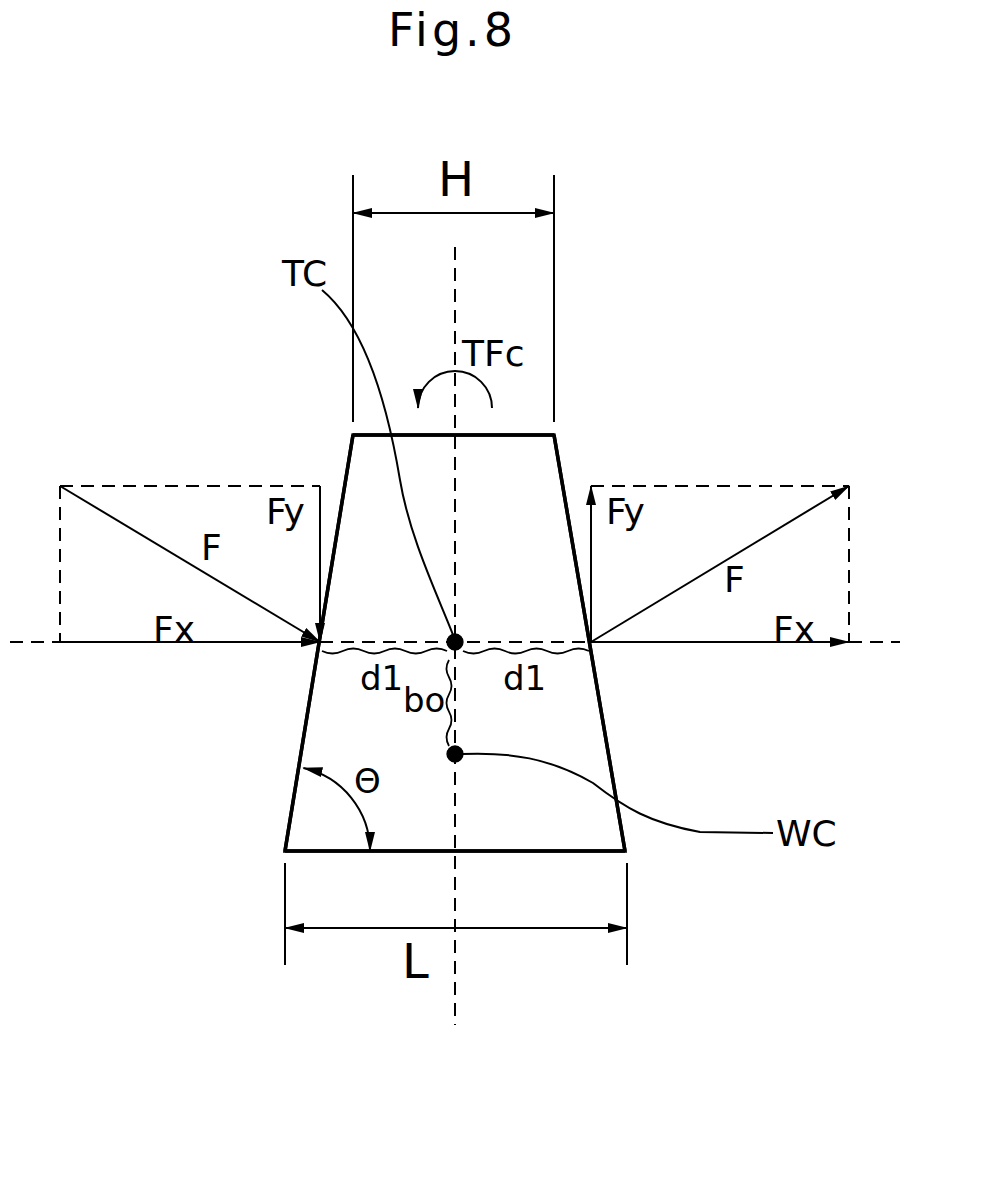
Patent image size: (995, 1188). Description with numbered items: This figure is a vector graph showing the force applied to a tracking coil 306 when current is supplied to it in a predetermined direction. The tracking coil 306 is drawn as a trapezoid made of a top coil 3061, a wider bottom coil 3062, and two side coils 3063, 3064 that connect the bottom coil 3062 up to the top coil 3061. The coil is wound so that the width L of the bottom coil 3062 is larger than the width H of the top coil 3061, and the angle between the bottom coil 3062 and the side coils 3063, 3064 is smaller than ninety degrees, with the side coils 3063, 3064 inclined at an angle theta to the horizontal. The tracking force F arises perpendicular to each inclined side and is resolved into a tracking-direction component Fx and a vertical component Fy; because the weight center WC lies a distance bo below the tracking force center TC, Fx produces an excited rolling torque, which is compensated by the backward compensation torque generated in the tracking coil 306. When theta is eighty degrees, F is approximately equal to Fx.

The tracking coil 306 is at (780, 243).
The top coil 3061 is at (512, 433).
The bottom coil 3062 is at (565, 852).
The side coil 3063 is at (301, 735).
The side coil 3064 is at (605, 718).